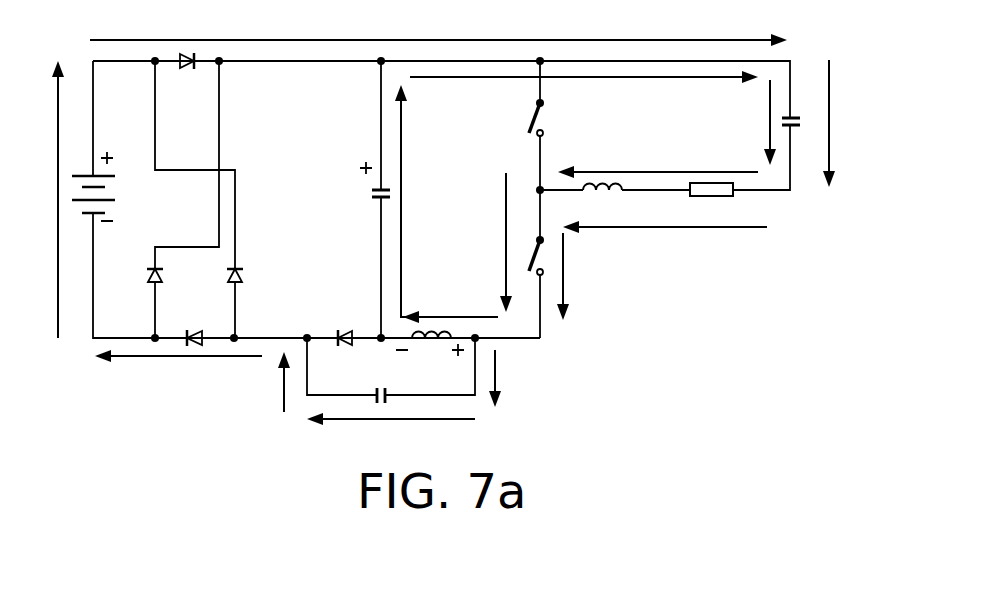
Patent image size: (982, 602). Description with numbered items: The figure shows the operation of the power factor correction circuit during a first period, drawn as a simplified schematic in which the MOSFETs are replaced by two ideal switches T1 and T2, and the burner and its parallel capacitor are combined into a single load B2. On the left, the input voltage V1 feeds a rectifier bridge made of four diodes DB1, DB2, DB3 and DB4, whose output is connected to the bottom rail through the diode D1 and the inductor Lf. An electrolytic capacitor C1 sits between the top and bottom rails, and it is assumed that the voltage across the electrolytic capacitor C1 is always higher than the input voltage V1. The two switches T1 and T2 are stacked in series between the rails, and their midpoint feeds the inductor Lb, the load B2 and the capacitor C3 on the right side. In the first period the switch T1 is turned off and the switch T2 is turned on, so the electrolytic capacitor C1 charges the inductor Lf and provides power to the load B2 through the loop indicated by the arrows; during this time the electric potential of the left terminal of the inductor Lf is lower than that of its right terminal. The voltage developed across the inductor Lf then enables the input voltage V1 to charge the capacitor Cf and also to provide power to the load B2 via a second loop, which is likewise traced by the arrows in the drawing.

The bridge rectifier diode DB1 is at (192, 75).
The bridge rectifier diode DB2 is at (198, 325).
The bridge rectifier diode DB3 is at (257, 276).
The bridge rectifier diode DB4 is at (134, 276).
The input voltage V1 is at (108, 186).
The electrolytic capacitor C1 is at (367, 183).
The switch T1 is at (523, 117).
The switch T2 is at (526, 255).
The inductor Lb is at (602, 201).
The load B2 is at (711, 204).
The capacitor C3 is at (802, 108).
The diode D1 is at (346, 351).
The inductor Lf is at (430, 349).
The capacitor Cf is at (378, 383).